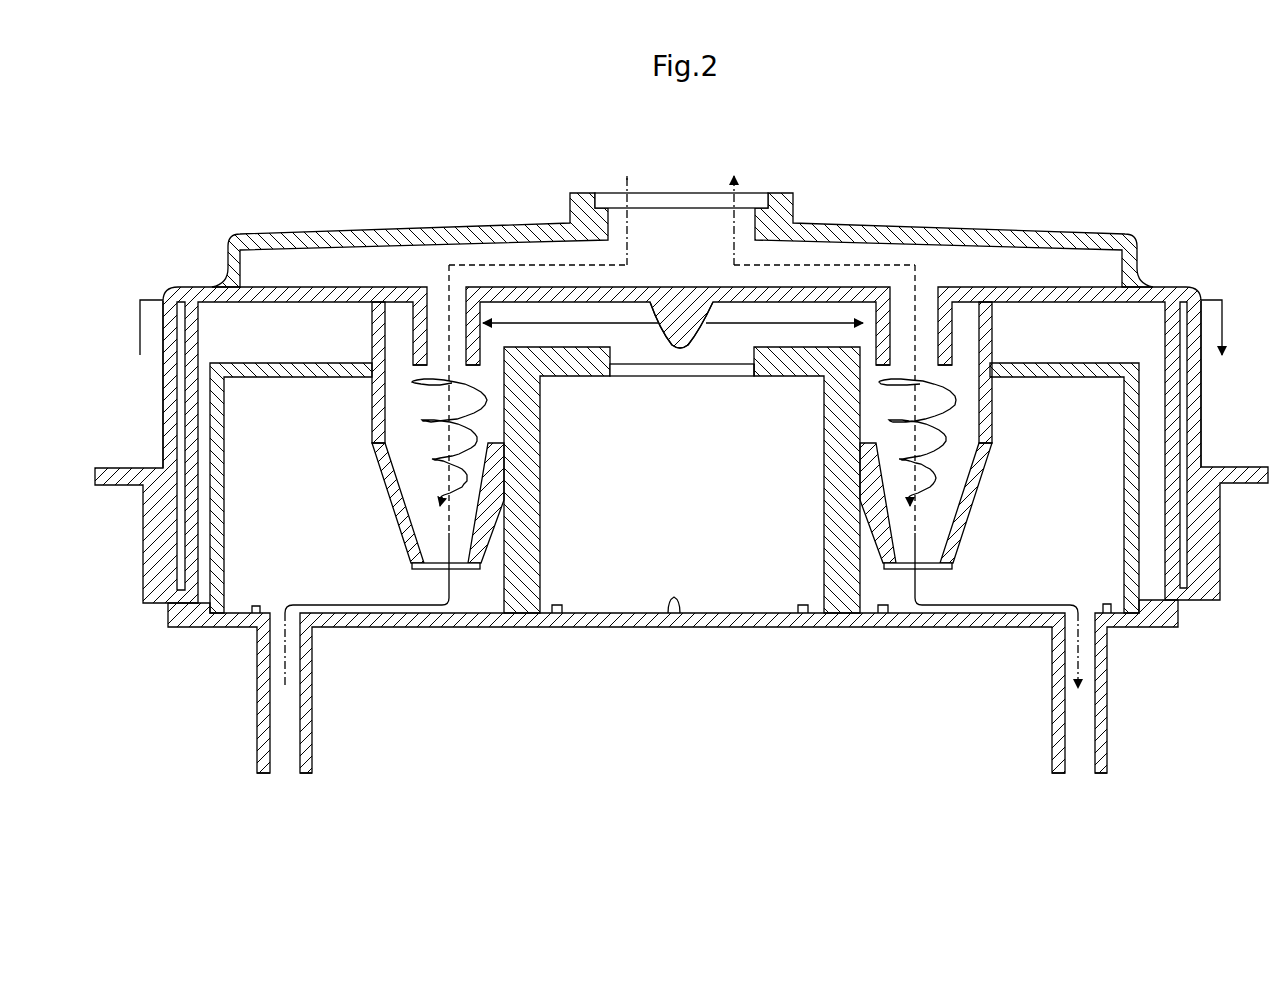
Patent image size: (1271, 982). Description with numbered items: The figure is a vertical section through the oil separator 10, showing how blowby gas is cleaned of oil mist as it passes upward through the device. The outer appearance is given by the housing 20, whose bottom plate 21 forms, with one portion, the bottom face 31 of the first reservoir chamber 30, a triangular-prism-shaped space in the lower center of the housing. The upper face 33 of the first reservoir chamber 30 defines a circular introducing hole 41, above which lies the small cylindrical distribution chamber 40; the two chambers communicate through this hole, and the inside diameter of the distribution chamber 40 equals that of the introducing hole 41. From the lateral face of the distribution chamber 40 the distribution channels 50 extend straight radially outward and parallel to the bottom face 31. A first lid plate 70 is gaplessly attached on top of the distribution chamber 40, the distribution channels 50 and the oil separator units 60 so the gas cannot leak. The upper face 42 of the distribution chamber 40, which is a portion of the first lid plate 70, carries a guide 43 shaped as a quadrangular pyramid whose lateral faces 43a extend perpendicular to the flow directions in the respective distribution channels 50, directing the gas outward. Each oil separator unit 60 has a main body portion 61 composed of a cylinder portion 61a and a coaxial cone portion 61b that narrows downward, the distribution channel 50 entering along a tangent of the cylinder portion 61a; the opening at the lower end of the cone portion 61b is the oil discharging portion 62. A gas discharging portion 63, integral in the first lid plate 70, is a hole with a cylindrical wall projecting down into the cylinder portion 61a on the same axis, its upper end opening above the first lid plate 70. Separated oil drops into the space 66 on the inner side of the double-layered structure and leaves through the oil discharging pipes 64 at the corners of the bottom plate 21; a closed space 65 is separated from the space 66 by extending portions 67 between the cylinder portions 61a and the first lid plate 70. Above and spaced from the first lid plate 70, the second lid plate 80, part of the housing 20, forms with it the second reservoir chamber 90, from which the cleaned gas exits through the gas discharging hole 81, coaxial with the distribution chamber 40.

The oil separator 10 is at (681, 428).
The housing 20 is at (673, 456).
The bottom plate 21 is at (440, 628).
The first reservoir chamber 30 is at (700, 523).
The bottom face 31 is at (673, 615).
The upper face 33 is at (752, 378).
The distribution chamber 40 is at (654, 359).
The introducing hole 41 is at (627, 380).
The upper face 42 is at (627, 300).
The guide 43 is at (687, 386).
The lateral face 43a is at (700, 324).
The distribution channel 50 is at (557, 350).
The oil separator unit 60 is at (689, 451).
The main body portion 61 is at (689, 432).
The cylinder portion 61a is at (375, 432).
The cone portion 61b is at (386, 468).
The oil discharging portion 62 is at (430, 571).
The gas discharging portion 63 is at (413, 332).
The oil discharging pipe 64 is at (257, 705).
The closed space 65 is at (228, 328).
The space 66 is at (245, 580).
The extending portion 67 is at (208, 417).
The first lid plate 70 is at (1030, 286).
The second lid plate 80 is at (375, 232).
The gas discharging hole 81 is at (673, 190).
The second reservoir chamber 90 is at (693, 279).